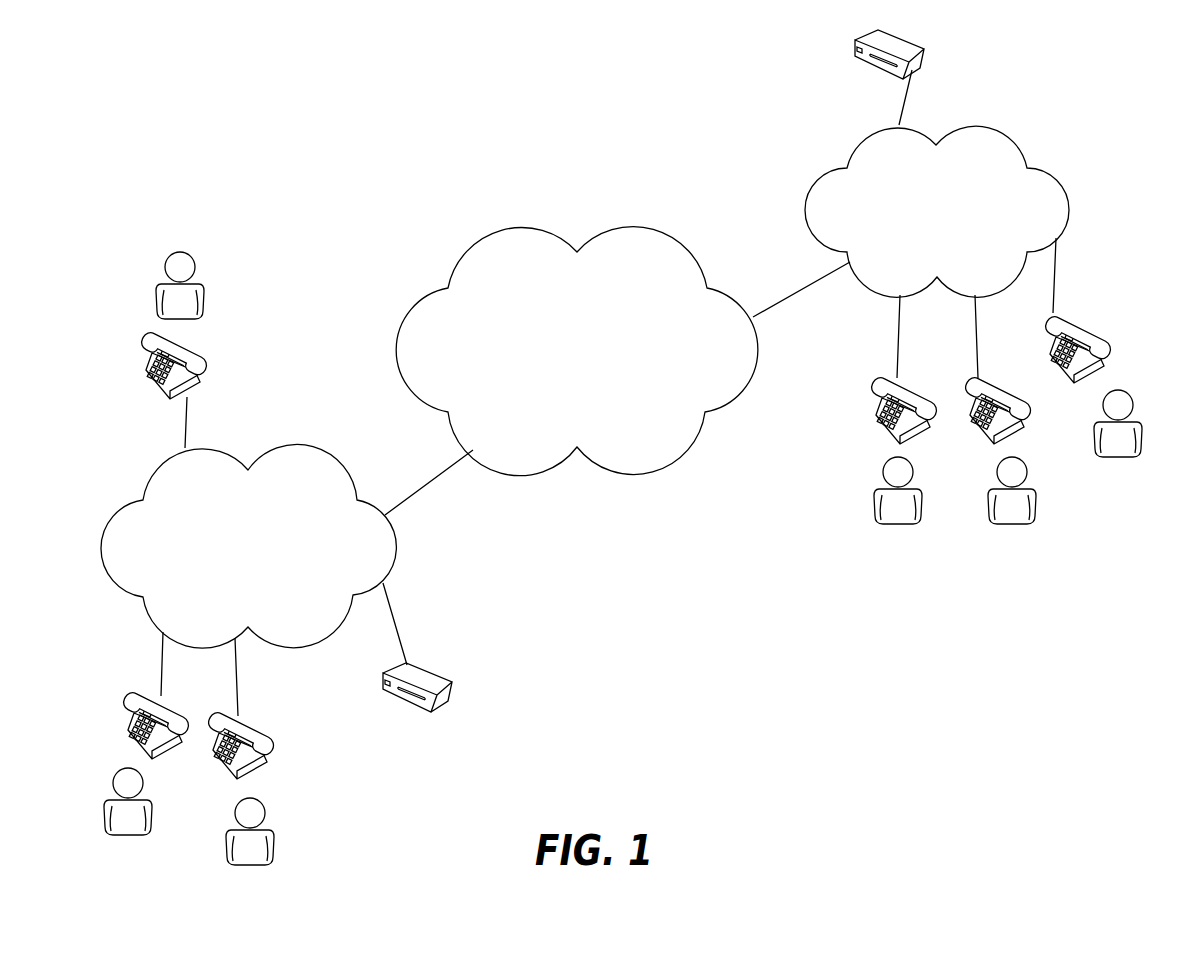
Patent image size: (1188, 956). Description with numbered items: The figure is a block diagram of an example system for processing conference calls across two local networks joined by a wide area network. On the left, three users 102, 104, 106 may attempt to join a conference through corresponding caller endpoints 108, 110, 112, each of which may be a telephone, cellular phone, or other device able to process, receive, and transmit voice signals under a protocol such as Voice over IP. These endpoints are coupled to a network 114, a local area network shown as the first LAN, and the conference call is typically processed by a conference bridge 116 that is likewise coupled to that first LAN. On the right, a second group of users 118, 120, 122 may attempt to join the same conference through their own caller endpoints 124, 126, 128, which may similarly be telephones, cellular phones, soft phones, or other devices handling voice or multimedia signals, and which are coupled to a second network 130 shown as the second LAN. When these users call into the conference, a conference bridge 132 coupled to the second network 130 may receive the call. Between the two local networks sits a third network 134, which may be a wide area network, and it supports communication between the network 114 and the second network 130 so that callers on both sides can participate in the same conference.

The user 102 is at (190, 256).
The user 104 is at (152, 804).
The user 106 is at (268, 824).
The caller endpoint 108 is at (198, 360).
The caller endpoint 110 is at (170, 711).
The caller endpoint 112 is at (257, 727).
The network 114 is at (248, 546).
The conference bridge 116 is at (420, 672).
The user 118 is at (920, 492).
The user 120 is at (1030, 490).
The user 122 is at (1127, 398).
The caller endpoint 124 is at (908, 385).
The caller endpoint 126 is at (1000, 385).
The caller endpoint 128 is at (1090, 327).
The second network 130 is at (937, 211).
The conference bridge 132 is at (905, 42).
The third network 134 is at (577, 351).